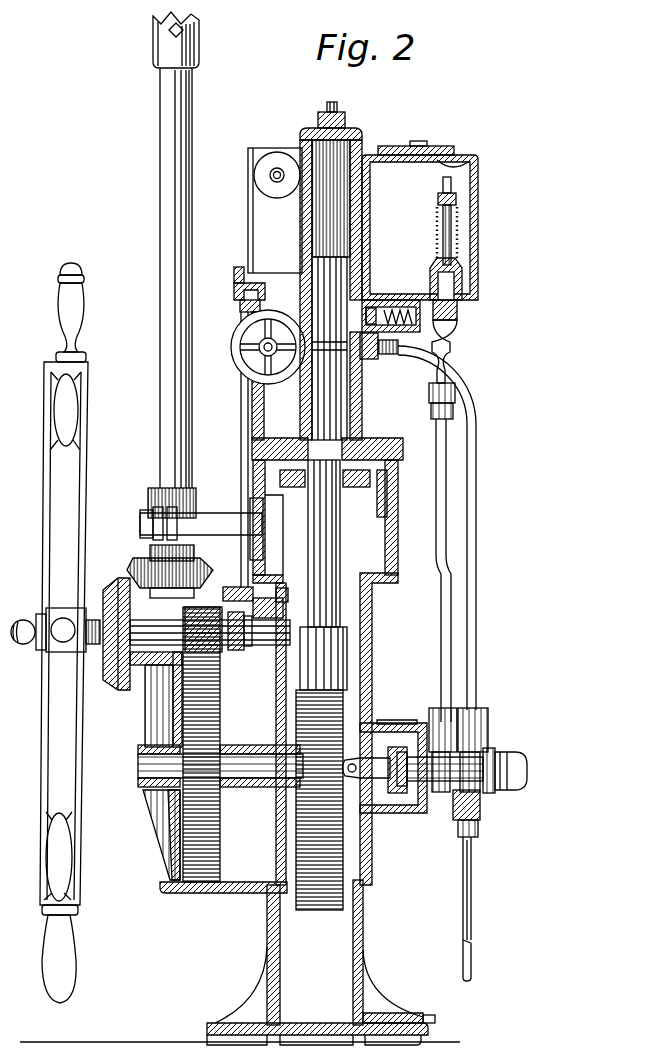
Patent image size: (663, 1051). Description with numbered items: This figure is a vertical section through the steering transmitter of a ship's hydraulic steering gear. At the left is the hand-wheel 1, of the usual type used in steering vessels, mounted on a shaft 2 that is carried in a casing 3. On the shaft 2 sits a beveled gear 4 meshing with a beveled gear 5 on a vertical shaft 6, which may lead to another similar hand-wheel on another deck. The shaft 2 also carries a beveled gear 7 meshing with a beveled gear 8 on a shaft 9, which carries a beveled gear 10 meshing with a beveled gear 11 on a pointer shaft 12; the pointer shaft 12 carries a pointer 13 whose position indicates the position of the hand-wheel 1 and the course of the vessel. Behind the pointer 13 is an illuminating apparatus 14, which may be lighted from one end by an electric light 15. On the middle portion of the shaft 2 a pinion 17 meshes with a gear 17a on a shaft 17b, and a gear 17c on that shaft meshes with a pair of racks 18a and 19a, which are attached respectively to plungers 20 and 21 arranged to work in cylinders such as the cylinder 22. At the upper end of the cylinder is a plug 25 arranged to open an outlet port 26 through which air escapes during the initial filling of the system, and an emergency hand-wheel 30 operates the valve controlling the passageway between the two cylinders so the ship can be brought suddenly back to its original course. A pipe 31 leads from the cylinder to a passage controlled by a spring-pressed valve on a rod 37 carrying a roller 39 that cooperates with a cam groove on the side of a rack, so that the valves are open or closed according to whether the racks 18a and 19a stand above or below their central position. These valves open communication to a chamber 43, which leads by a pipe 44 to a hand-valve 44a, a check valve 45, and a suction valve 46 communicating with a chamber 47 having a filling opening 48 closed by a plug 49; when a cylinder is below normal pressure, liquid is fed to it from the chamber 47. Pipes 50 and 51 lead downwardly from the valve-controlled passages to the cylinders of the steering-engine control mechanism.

The hand-wheel 1 is at (68, 506).
The shaft 2 is at (22, 640).
The casing 3 is at (176, 706).
The beveled gear 4 is at (122, 684).
The beveled gear 5 is at (128, 570).
The vertical shaft 6 is at (166, 228).
The beveled gear 7 is at (238, 642).
The beveled gear 8 is at (283, 601).
The shaft 9 is at (249, 470).
The beveled gear 10 is at (245, 307).
The beveled gear 11 is at (245, 290).
The pointer shaft 12 is at (238, 274).
The pointer 13 is at (247, 195).
The illuminating apparatus 14 is at (258, 150).
The electric light 15 is at (277, 168).
The pinion 17 is at (197, 632).
The gear 17a is at (205, 718).
The shaft 17b is at (150, 795).
The gear 17c is at (277, 827).
The rack 18a is at (332, 668).
The rack 19a is at (318, 722).
The plunger 20 is at (332, 550).
The plunger 21 is at (330, 287).
The cylinder 22 is at (340, 157).
The plug 25 is at (323, 115).
The outlet port 26 is at (342, 142).
The emergency hand-wheel 30 is at (240, 352).
The pipe 31 is at (476, 614).
The rod 37 is at (368, 790).
The roller 39 is at (382, 790).
The chamber 43 is at (445, 795).
The pipe 44 is at (446, 503).
The hand-valve 44a is at (452, 360).
The check valve 45 is at (420, 318).
The suction valve 46 is at (450, 246).
The chamber 47 is at (458, 166).
The filling opening 48 is at (466, 158).
The plug 49 is at (428, 148).
The pipe 50 is at (470, 881).
The pipe 51 is at (472, 958).